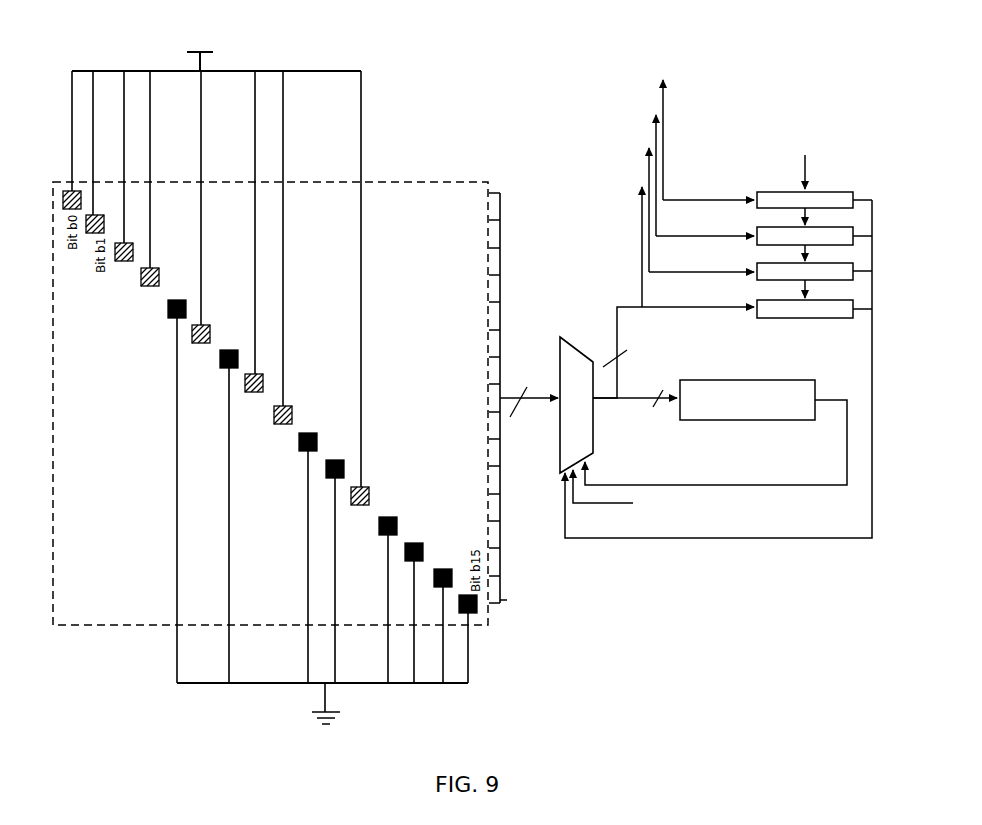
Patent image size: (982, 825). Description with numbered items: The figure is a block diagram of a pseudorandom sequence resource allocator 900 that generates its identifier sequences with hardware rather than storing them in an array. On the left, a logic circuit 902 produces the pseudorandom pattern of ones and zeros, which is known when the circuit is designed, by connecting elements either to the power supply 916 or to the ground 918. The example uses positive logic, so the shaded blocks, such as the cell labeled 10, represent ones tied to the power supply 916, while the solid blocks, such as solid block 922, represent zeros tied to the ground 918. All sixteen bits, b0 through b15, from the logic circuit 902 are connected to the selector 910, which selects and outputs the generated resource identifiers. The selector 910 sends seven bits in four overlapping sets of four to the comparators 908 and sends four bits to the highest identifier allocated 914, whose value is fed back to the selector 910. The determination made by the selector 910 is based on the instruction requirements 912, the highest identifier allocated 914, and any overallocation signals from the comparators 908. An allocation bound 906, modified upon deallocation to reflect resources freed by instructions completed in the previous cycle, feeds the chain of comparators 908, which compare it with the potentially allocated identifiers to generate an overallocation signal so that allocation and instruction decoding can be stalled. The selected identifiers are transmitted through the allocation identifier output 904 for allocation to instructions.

The bit cell (pull-up to power supply) 10 is at (63, 192).
The resource allocator 900 is at (540, 61).
The logic circuit 902 is at (417, 186).
The allocation identifier output 904 is at (612, 193).
The allocation bound 906 is at (807, 153).
The comparators 908 is at (853, 193).
The selector 910 is at (563, 341).
The instruction requirements 912 is at (676, 496).
The highest identifier allocated 914 is at (797, 380).
The power supply 916 is at (320, 38).
The ground 918 is at (480, 720).
The solid block 922 is at (168, 312).